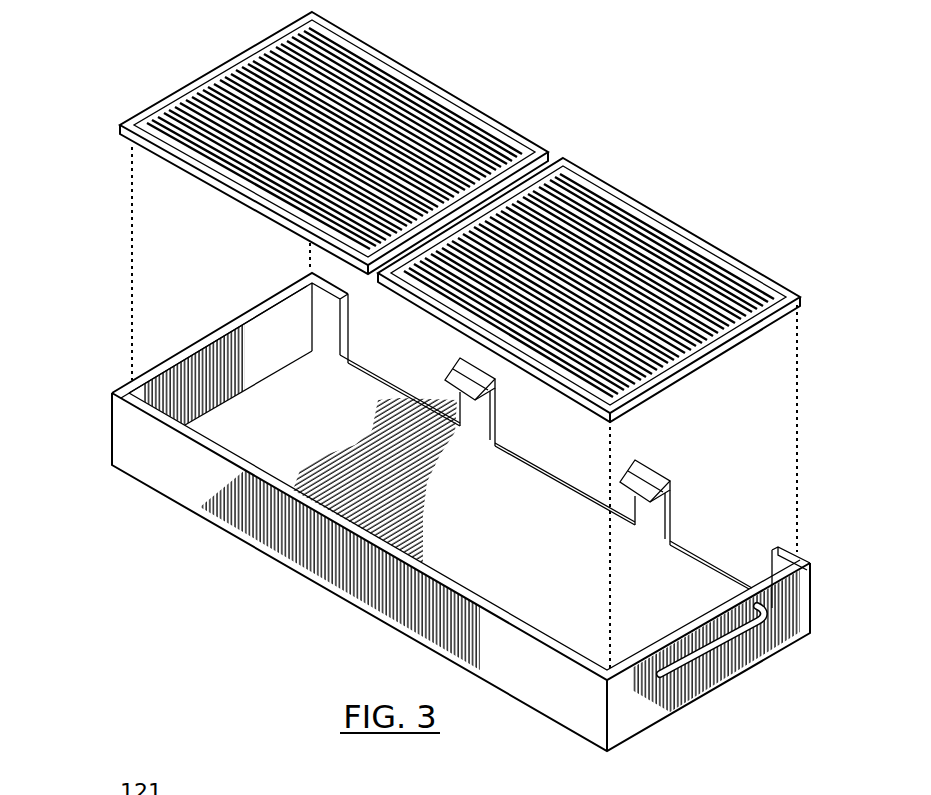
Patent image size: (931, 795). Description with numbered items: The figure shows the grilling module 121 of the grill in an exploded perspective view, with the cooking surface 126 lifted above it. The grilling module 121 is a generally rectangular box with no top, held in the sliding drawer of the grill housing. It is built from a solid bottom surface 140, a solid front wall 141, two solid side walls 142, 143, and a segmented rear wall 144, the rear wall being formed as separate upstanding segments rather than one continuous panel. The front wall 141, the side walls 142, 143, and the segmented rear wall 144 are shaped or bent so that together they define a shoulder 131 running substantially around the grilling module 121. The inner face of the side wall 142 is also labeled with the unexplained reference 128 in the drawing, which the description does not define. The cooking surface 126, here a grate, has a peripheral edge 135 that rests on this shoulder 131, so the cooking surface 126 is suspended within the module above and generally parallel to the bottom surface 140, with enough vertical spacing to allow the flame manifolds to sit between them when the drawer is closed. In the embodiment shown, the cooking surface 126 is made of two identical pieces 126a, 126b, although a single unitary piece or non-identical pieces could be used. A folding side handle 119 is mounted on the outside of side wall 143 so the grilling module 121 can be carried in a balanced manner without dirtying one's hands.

The grilling module 121 is at (114, 374).
The cooking surface 126 is at (486, 80).
The first cooking surface piece 126a is at (413, 71).
The second cooking surface piece 126b is at (650, 204).
The peripheral edge 135 is at (161, 127).
The side wall 142 is at (233, 340).
The inner wall surface 128 is at (267, 355).
The front wall 141 is at (214, 480).
The bottom surface 140 is at (463, 537).
The segmented rear wall 144 is at (550, 471).
The shoulder 131 is at (646, 464).
The folding side handle 119 is at (750, 638).
The side wall 143 is at (634, 705).